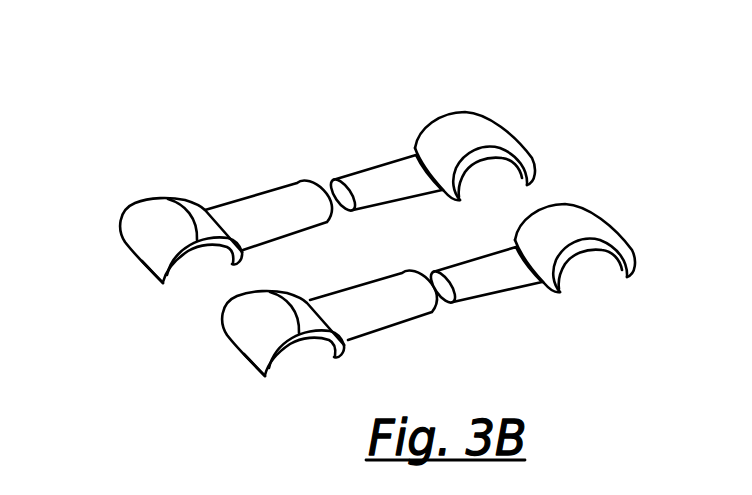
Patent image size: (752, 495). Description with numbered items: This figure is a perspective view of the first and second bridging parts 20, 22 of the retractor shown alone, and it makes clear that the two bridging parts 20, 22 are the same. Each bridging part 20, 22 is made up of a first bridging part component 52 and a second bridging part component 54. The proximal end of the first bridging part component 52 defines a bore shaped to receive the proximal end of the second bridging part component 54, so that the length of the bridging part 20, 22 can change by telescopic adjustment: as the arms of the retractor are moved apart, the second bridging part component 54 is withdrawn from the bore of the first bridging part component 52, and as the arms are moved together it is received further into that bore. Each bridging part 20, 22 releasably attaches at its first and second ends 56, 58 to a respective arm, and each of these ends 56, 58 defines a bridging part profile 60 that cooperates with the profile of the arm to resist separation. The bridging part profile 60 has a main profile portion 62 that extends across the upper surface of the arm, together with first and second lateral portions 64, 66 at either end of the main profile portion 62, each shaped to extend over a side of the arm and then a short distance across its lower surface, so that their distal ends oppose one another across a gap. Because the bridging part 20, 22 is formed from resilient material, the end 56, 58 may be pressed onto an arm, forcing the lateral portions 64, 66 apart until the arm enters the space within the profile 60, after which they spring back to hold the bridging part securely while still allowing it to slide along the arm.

The first bridging part 20 is at (378, 248).
The second bridging part 22 is at (378, 272).
The first bridging part component 52 is at (297, 203).
The second bridging part component 54 is at (388, 182).
The first end of the bridging part 56 is at (141, 247).
The second end of the bridging part 58 is at (493, 130).
The bridging part profile 60 is at (191, 268).
The main profile portion 62 is at (168, 199).
The first lateral portion 64 is at (160, 273).
The second lateral portion 66 is at (237, 263).